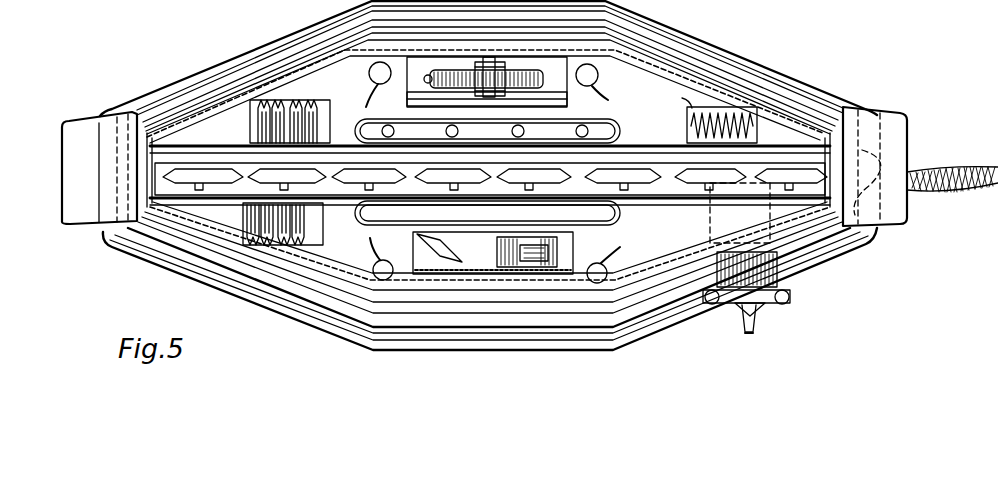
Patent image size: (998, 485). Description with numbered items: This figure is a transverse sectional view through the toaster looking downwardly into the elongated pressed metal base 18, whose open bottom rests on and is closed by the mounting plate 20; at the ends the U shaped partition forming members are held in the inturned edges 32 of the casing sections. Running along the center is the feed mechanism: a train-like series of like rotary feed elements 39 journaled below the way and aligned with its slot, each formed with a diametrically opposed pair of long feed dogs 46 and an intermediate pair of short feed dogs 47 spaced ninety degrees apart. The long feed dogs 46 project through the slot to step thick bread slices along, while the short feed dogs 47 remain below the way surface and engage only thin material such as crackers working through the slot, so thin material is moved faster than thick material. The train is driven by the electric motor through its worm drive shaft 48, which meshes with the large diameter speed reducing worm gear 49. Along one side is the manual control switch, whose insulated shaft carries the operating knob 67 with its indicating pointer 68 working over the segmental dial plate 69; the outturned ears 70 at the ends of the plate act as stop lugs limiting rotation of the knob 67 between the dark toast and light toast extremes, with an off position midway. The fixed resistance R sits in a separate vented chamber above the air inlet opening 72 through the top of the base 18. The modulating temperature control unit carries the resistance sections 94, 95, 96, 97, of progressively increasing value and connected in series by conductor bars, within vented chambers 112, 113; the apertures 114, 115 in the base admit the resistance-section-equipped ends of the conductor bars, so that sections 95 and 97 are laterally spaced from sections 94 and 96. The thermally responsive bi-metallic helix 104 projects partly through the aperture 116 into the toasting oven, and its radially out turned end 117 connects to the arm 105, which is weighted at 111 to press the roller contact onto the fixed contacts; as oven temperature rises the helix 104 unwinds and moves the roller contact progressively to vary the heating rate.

The base 18 is at (652, 38).
The mounting plate 20 is at (707, 45).
The inturned edges 32 is at (148, 156).
The rotary feed elements 39 is at (187, 190).
The long feed dogs 46 is at (820, 177).
The short feed dogs 47 is at (212, 172).
The worm drive shaft 48 is at (433, 68).
The worm gear 49 is at (600, 0).
The operating knob 67 is at (756, 322).
The indicating pointer 68 is at (744, 320).
The segmental dial plate 69 is at (770, 306).
The outturned ears 70 is at (792, 300).
The air inlet opening 72 is at (758, 128).
The resistance section 94 is at (294, 105).
The resistance section 95 is at (285, 246).
The resistance section 96 is at (262, 100).
The resistance section 97 is at (253, 243).
The bi-metallic helix 104 is at (500, 256).
The arm 105 is at (462, 270).
The weight 111 is at (440, 248).
The chamber 112 is at (213, 127).
The chamber 113 is at (222, 225).
The aperture 114 is at (365, 104).
The aperture 115 is at (372, 250).
The aperture 116 is at (573, 243).
The radially out turned end 117 is at (530, 262).